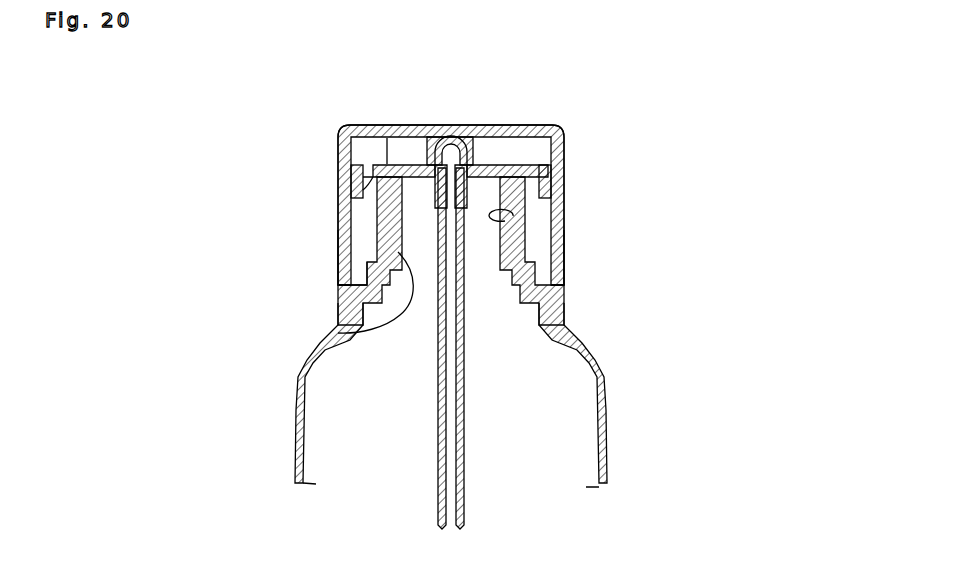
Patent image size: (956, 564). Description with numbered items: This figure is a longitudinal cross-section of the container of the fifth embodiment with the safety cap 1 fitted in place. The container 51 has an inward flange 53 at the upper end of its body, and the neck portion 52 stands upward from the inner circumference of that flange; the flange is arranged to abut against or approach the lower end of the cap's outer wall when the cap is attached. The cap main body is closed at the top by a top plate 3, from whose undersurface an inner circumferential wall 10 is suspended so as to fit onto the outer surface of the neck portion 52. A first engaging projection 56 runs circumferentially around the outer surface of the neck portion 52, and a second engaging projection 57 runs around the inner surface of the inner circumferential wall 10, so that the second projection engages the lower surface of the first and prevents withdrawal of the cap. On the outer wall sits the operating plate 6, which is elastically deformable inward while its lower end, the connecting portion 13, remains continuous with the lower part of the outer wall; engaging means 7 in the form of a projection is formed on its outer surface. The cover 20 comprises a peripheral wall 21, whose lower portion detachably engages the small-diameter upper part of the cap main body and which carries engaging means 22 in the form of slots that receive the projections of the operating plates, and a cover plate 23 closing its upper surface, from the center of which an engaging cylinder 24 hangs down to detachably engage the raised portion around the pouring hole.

The safety cap 1 is at (299, 236).
The top plate 3 is at (383, 127).
The operating plate 6 is at (334, 273).
The engaging means 7 is at (345, 165).
The inner circumferential wall 10 is at (345, 209).
The connecting portion 13 is at (334, 252).
The cover 20 is at (496, 101).
The peripheral wall 21 is at (565, 147).
The engaging means 22 is at (345, 172).
The cover plate 23 is at (417, 128).
The engaging cylinder 24 is at (470, 152).
The container 51 is at (292, 396).
The neck portion 52 is at (347, 331).
The inward flange 53 is at (338, 285).
The first engaging projection 56 is at (527, 222).
The second engaging projection 57 is at (545, 200).